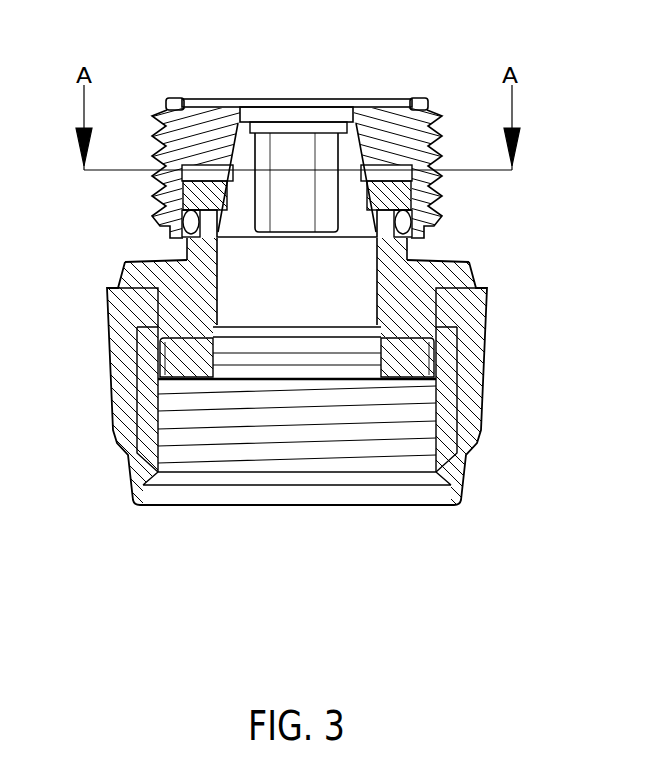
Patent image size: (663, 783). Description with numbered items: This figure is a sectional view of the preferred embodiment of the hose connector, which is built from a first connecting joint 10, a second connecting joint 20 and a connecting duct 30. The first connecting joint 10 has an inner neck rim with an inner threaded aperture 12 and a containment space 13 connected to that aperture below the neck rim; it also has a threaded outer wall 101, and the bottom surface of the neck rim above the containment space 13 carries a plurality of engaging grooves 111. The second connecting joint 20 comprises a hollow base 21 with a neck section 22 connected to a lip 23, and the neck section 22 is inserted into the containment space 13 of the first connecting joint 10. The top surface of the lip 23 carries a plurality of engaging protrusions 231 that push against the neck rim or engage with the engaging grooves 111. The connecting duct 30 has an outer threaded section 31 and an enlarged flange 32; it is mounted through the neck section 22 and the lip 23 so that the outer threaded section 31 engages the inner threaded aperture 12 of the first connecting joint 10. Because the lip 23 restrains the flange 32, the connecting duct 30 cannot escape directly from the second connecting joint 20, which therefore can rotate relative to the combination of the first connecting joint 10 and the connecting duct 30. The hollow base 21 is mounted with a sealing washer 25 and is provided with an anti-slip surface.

The first connecting joint 10 is at (308, 138).
The threaded outer wall 101 is at (441, 110).
The engaging grooves 111 is at (166, 138).
The inner threaded aperture 12 is at (259, 83).
The outer threaded section 31 is at (296, 114).
The containment space 13 is at (427, 190).
The connecting duct 30 is at (288, 133).
The engaging protrusions 231 is at (398, 183).
The lip 23 is at (137, 201).
The enlarged flange 32 is at (207, 201).
The neck section 22 is at (412, 224).
The second connecting joint 20 is at (298, 385).
The hollow base 21 is at (452, 397).
The sealing washer 25 is at (165, 353).